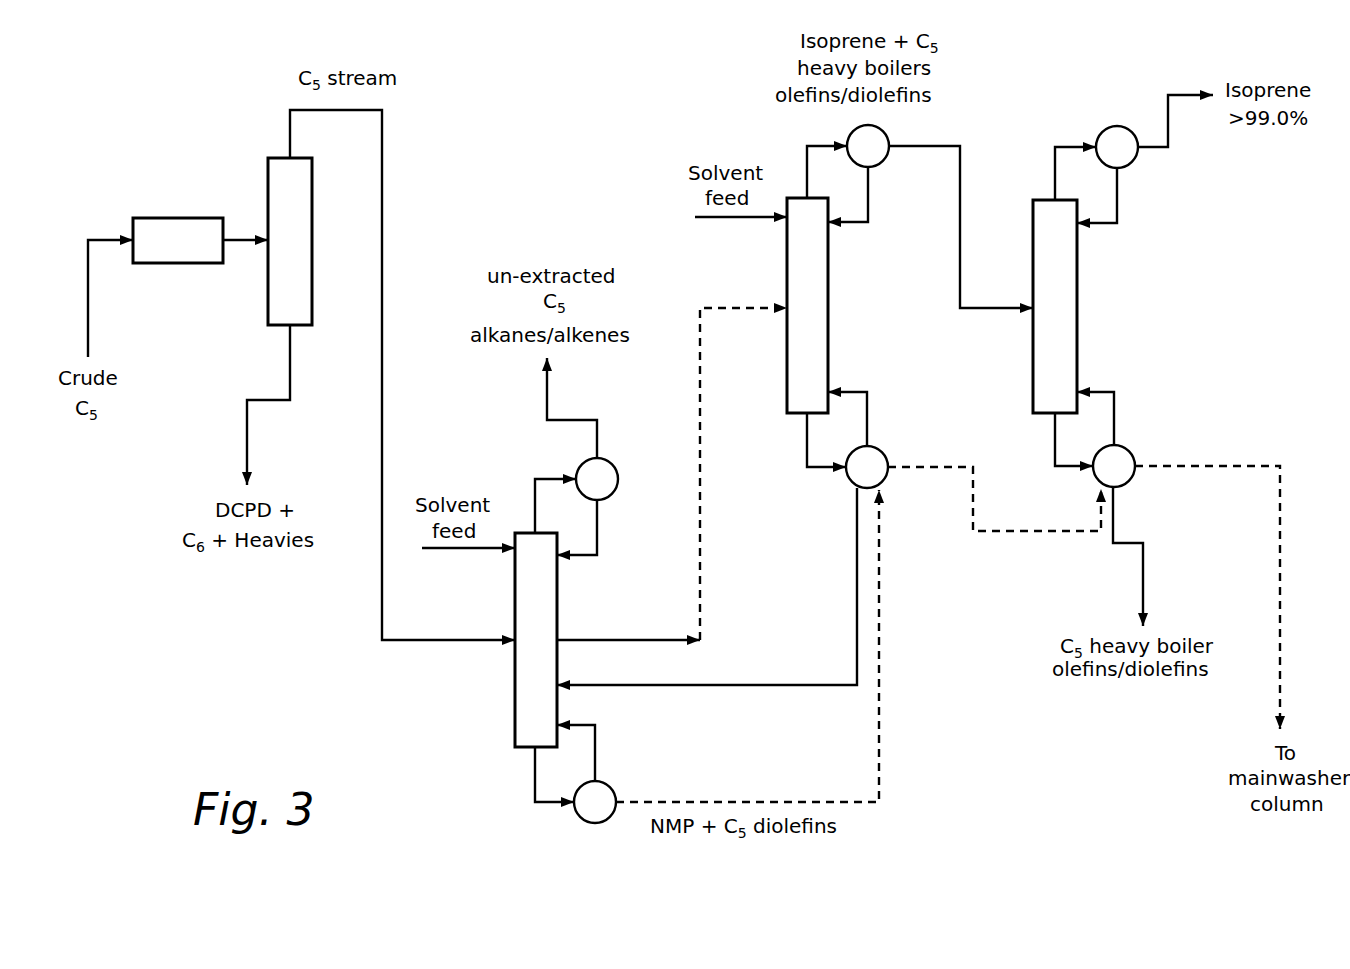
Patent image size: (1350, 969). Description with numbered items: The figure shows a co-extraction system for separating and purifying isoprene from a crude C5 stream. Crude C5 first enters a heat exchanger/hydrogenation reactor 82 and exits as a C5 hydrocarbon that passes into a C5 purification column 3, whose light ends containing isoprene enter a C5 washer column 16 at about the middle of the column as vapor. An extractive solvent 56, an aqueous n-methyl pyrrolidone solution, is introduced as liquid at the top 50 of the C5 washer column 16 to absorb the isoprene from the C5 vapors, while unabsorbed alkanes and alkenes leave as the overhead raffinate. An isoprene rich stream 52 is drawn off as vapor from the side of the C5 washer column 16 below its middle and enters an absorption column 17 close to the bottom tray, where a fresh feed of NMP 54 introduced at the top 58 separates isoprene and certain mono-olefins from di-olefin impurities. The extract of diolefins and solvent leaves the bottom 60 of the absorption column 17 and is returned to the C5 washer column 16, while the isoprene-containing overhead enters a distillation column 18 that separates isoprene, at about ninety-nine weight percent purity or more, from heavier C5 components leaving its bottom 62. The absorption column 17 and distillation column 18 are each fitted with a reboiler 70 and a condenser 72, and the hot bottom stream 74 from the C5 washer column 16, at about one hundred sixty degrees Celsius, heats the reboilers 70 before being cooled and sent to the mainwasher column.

The C5 purification column 3 is at (268, 278).
The heat exchanger/hydrogenation reactor 82 is at (185, 218).
The C5 washer column 16 is at (515, 679).
The absorption column 17 is at (828, 318).
The distillation column 18 is at (1077, 308).
The top of the C5 washer column 50 is at (525, 533).
The isoprene rich stream 52 is at (700, 512).
The fresh feed of NMP 54 is at (737, 218).
The extractive solvent 56 is at (460, 552).
The top of the absorption column 58 is at (797, 198).
The bottom of the absorption column 60 is at (797, 414).
The bottom of the distillation column 62 is at (1043, 414).
The reboiler 70 is at (610, 789).
The condenser 72 is at (610, 488).
The bottom stream 74 is at (522, 747).